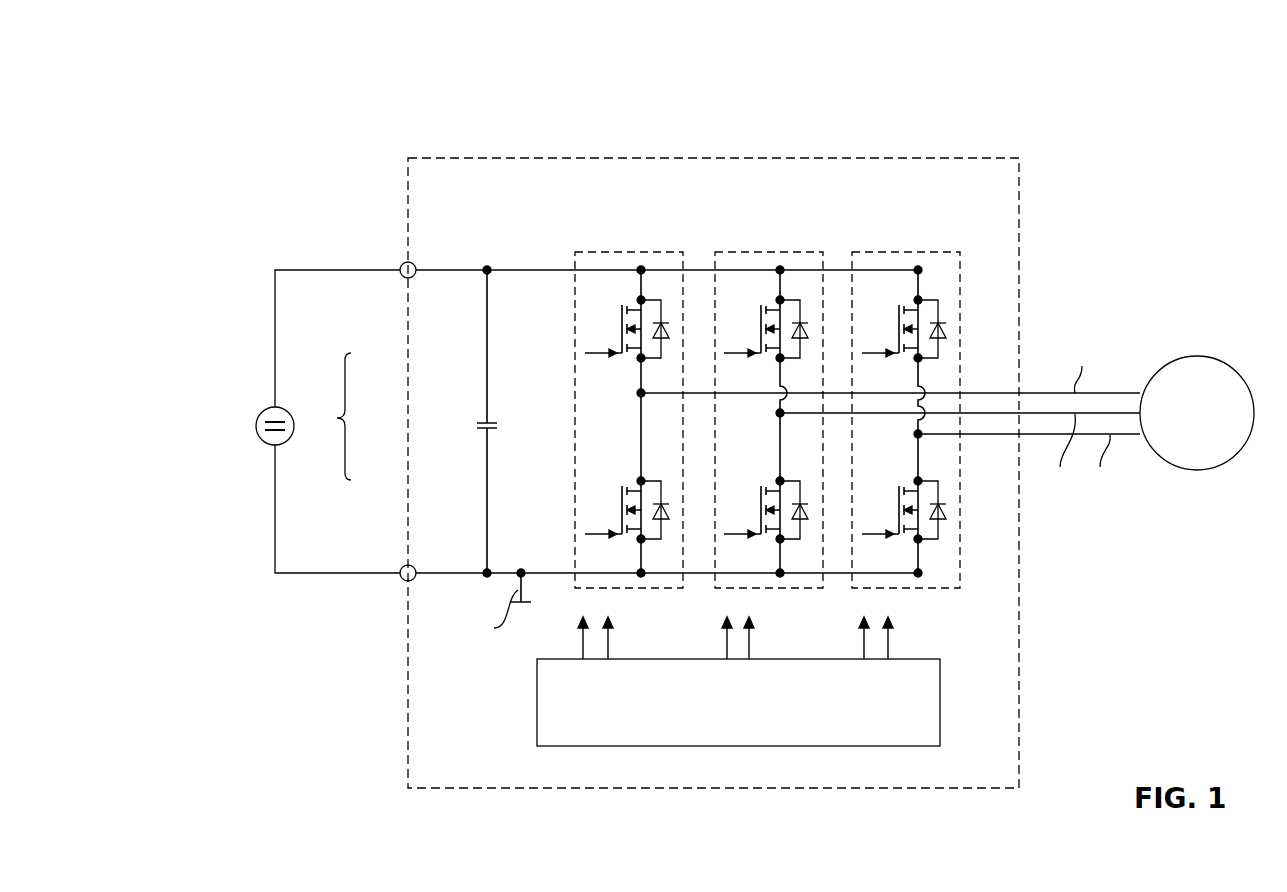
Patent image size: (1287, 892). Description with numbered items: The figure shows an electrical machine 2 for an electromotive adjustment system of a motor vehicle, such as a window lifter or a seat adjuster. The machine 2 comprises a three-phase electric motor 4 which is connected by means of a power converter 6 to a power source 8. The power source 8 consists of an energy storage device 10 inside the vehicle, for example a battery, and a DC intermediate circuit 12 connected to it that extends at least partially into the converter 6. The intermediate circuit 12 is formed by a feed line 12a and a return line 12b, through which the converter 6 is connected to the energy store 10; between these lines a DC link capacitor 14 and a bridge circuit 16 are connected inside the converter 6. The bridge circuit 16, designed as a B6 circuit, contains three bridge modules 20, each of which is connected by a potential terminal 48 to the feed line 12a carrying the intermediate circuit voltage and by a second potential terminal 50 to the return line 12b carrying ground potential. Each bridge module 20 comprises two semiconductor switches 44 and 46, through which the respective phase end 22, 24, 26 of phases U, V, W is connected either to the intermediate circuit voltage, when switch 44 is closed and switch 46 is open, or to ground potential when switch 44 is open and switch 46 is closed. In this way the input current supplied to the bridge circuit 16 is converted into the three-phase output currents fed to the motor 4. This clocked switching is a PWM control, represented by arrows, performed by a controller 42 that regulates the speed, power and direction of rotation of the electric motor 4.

The electrical machine 2 is at (1092, 108).
The electric motor 4 is at (1197, 413).
The power converter 6 is at (498, 158).
The power source 8 is at (399, 421).
The energy storage device 10 is at (259, 416).
The intermediate circuit 12 is at (336, 418).
The feed line 12a is at (405, 279).
The return line 12b is at (405, 565).
The DC link capacitor 14 is at (485, 430).
The bridge circuit 16 is at (702, 195).
The bridge module 20 is at (590, 252).
The phase end 22 is at (636, 393).
The phase end 24 is at (775, 413).
The phase end 26 is at (913, 434).
The controller 42 is at (738, 681).
The semiconductor switch 44 is at (622, 330).
The semiconductor switch 46 is at (622, 511).
The potential terminal 48 is at (641, 268).
The second potential terminal 50 is at (646, 580).